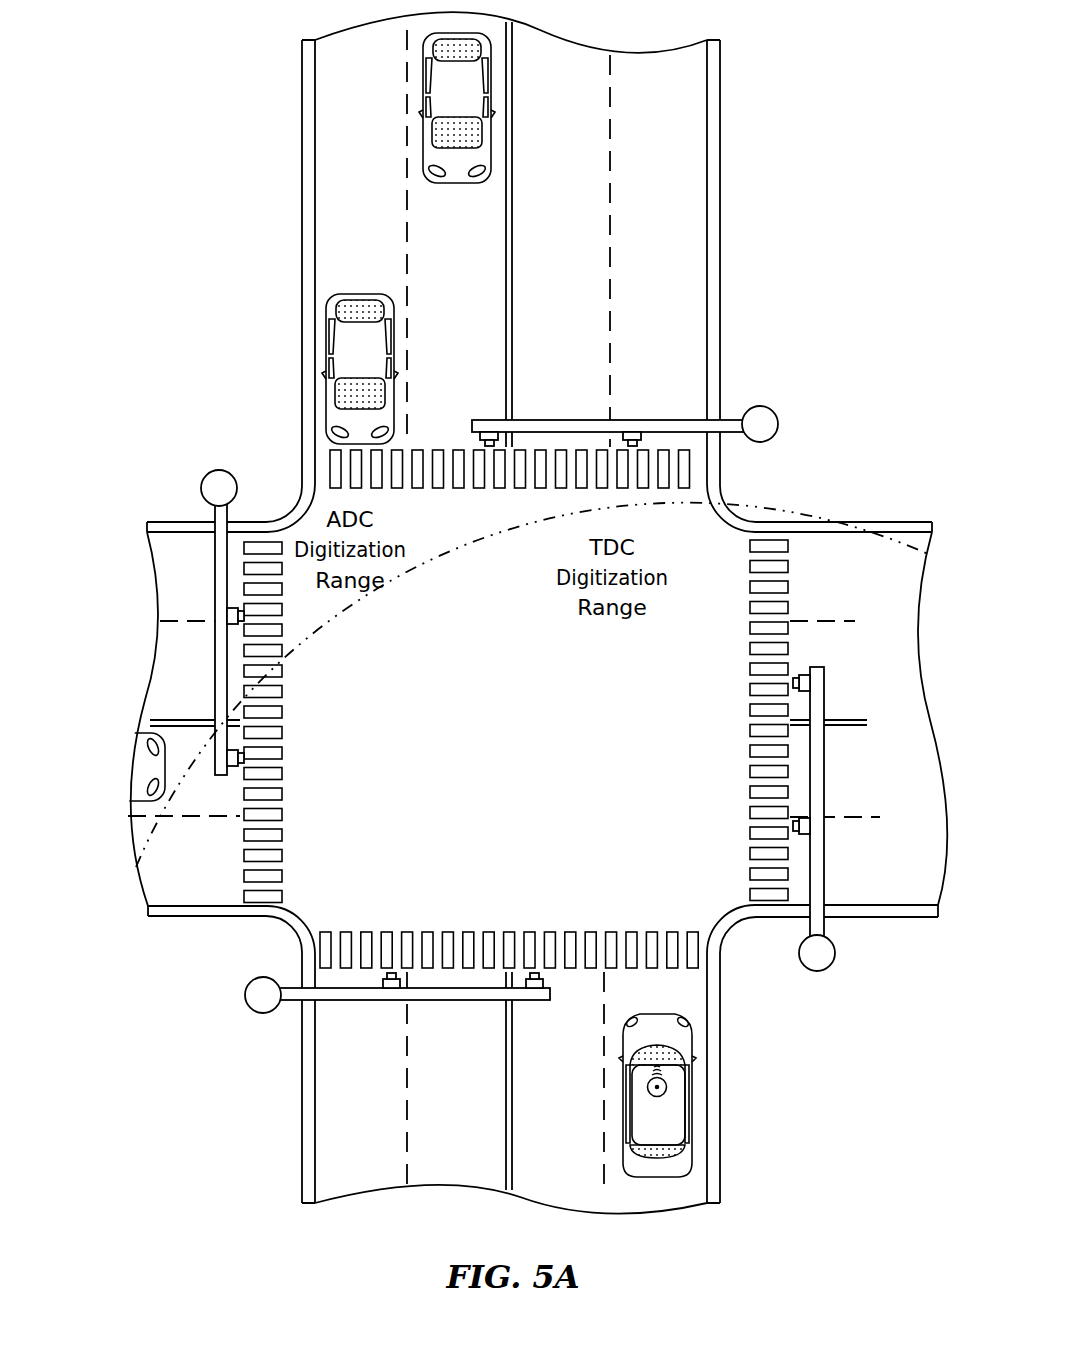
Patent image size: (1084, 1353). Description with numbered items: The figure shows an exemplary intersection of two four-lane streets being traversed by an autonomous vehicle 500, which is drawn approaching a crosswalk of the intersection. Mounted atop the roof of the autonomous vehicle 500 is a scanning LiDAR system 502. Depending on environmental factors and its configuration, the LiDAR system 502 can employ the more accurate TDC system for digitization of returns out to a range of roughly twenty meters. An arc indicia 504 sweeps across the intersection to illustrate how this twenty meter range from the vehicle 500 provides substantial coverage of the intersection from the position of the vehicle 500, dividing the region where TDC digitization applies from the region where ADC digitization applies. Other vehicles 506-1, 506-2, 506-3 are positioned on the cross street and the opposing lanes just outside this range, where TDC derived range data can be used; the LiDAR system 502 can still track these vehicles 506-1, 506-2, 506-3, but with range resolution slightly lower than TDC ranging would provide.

The autonomous vehicle 500 is at (707, 1090).
The scanning LiDAR system 502 is at (667, 1093).
The arc indicia 504 is at (148, 835).
The vehicle 506-1 is at (133, 762).
The vehicle 506-2 is at (330, 380).
The vehicle 506-3 is at (430, 163).